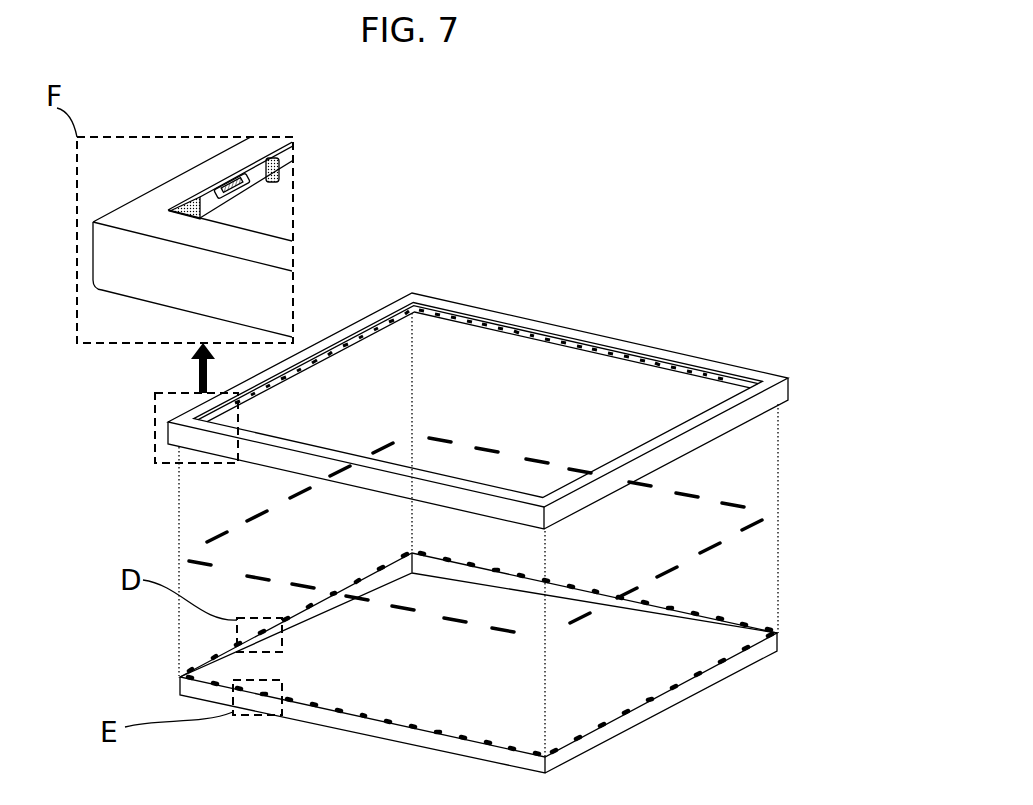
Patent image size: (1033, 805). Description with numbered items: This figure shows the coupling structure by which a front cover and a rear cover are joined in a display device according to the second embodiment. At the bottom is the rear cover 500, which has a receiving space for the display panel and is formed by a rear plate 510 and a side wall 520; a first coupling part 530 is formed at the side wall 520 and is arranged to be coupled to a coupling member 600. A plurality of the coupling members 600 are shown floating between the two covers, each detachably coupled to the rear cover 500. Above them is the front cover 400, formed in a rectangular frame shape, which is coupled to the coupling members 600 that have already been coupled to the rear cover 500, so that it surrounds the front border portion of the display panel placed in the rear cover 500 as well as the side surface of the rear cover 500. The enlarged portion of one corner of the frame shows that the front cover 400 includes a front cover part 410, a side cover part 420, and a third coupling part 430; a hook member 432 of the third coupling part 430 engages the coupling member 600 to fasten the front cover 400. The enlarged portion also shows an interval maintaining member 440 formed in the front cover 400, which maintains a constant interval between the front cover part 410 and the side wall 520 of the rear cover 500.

The front cover 400 is at (603, 333).
The front cover part 410 is at (183, 177).
The side cover part 420 is at (132, 280).
The third coupling part 430 is at (243, 187).
The hook member 432 is at (227, 177).
The interval maintaining member 440 is at (278, 165).
The rear cover 500 is at (478, 668).
The rear plate 510 is at (643, 692).
The side wall 520 is at (610, 737).
The first coupling part 530 is at (672, 763).
The coupling member 600 is at (693, 493).